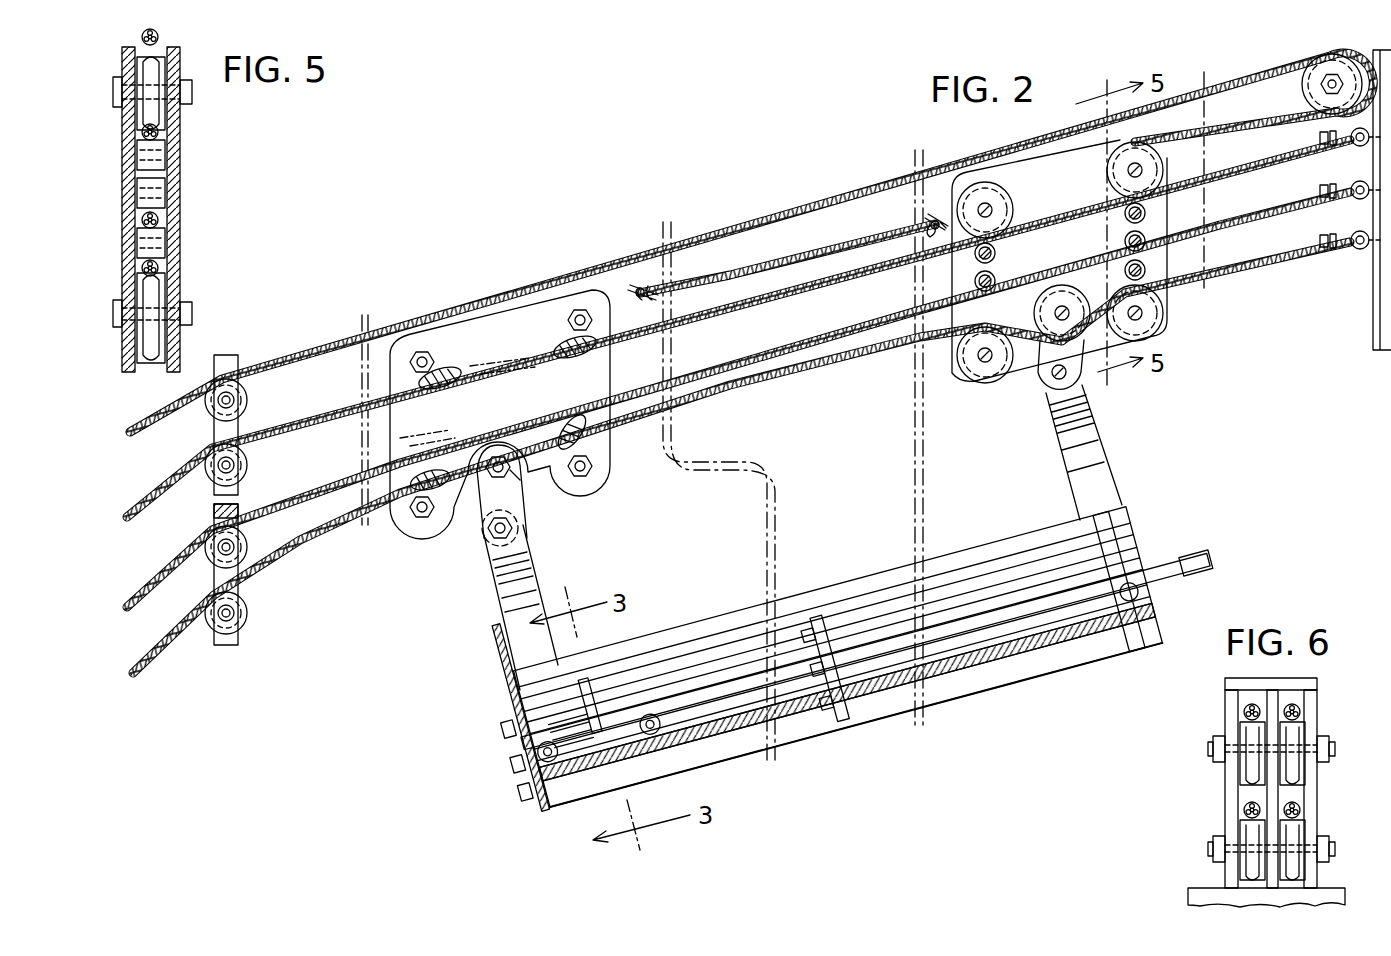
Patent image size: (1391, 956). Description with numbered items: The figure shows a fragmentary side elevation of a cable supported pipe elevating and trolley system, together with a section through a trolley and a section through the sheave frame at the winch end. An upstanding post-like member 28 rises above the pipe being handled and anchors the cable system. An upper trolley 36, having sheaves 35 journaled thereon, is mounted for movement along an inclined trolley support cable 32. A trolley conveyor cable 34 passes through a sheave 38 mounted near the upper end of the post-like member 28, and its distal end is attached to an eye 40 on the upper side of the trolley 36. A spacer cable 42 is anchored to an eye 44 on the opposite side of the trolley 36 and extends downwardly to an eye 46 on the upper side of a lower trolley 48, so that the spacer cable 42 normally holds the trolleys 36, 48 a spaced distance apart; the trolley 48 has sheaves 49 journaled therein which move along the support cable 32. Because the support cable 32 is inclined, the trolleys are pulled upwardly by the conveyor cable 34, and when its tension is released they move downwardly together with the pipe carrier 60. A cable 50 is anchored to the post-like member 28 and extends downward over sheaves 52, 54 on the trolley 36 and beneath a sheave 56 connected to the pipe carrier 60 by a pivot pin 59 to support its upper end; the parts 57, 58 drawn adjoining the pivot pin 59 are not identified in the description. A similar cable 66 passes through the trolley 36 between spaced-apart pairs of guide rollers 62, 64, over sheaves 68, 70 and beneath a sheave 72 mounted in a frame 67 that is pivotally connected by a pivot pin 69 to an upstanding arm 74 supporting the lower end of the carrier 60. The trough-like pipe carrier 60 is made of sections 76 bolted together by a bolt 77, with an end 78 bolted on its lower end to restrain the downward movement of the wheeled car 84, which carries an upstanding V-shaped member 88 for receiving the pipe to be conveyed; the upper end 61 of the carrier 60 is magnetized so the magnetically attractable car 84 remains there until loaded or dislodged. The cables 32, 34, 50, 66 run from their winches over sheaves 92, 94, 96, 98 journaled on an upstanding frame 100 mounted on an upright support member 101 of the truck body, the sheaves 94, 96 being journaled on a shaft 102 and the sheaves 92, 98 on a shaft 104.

In FIG. 2, the upstanding post-like member 28 is at (1373, 300).
In FIG. 2, the trolley support cable 32 is at (812, 292).
In FIG. 5, the trolley support cable 32 is at (152, 155).
In FIG. 6, the trolley support cable 32 is at (1245, 812).
In FIG. 2, the trolley conveyor cable 34 is at (790, 208).
In FIG. 5, the trolley conveyor cable 34 is at (159, 37).
In FIG. 6, the trolley conveyor cable 34 is at (1245, 712).
In FIG. 2, the sheaves 35 is at (1012, 205).
In FIG. 5, the sheaves 35 is at (152, 105).
In FIG. 2, the trolley 36 is at (1010, 142).
In FIG. 5, the trolley 36 is at (159, 132).
In FIG. 2, the sheave 38 is at (1300, 92).
In FIG. 2, the eye 40 is at (1160, 145).
In FIG. 2, the spacer cable 42 is at (795, 255).
In FIG. 2, the eye 44 is at (928, 205).
In FIG. 2, the eye 46 is at (645, 290).
In FIG. 2, the trolley 48 is at (522, 312).
In FIG. 2, the sheaves 49 is at (447, 372).
In FIG. 2, the cable 50 is at (905, 330).
In FIG. 5, the cable 50 is at (159, 268).
In FIG. 6, the cable 50 is at (1300, 712).
In FIG. 2, the sheave 52 is at (1165, 313).
In FIG. 5, the sheave 52 is at (152, 300).
In FIG. 2, the sheave 54 is at (985, 370).
In FIG. 2, the sheave 56 is at (1038, 310).
In FIG. 2, the link 57 is at (1035, 385).
In FIG. 2, the arm 58 is at (1090, 395).
In FIG. 2, the pivot pin 59 is at (1050, 395).
In FIG. 2, the pipe carrier 60 is at (852, 629).
In FIG. 2, the upper end 61 is at (1123, 580).
In FIG. 2, the rollers 62 is at (995, 281).
In FIG. 5, the rollers 62 is at (152, 245).
In FIG. 2, the rollers 64 is at (995, 253).
In FIG. 5, the rollers 64 is at (152, 190).
In FIG. 2, the cable 66 is at (685, 385).
In FIG. 5, the cable 66 is at (159, 220).
In FIG. 6, the cable 66 is at (1300, 812).
In FIG. 2, the frame 67 is at (527, 510).
In FIG. 2, the sheave 68 is at (575, 430).
In FIG. 2, the pivot pin 69 is at (488, 533).
In FIG. 2, the sheave 70 is at (432, 478).
In FIG. 2, the sheave 72 is at (512, 452).
In FIG. 2, the upstanding arm 74 is at (540, 548).
In FIG. 2, the sections 76 is at (856, 725).
In FIG. 2, the bolt 77 is at (823, 670).
In FIG. 2, the end 78 is at (520, 718).
In FIG. 2, the wheeled car 84 is at (853, 631).
In FIG. 2, the V-shaped member 88 is at (572, 713).
In FIG. 2, the sheave 92 is at (247, 465).
In FIG. 6, the sheave 92 is at (1250, 830).
In FIG. 2, the sheave 94 is at (247, 400).
In FIG. 6, the sheave 94 is at (1250, 730).
In FIG. 2, the sheave 96 is at (247, 540).
In FIG. 6, the sheave 96 is at (1295, 730).
In FIG. 2, the sheave 98 is at (247, 615).
In FIG. 6, the sheave 98 is at (1295, 830).
In FIG. 6, the upstanding frame 100 is at (1317, 690).
In FIG. 6, the upright support member 101 is at (1330, 898).
In FIG. 6, the shaft 102 is at (1208, 748).
In FIG. 6, the shaft 104 is at (1208, 848).